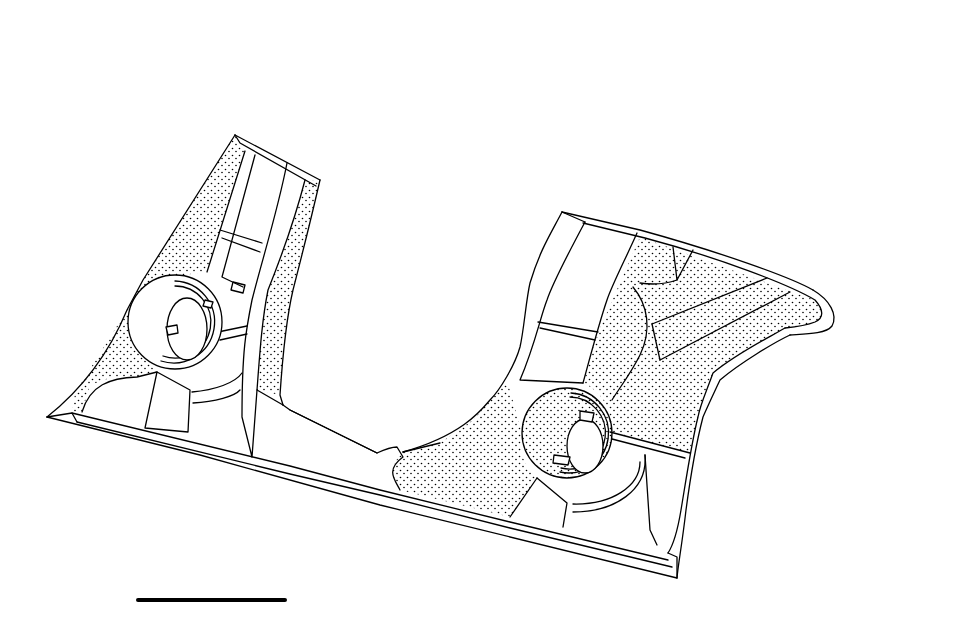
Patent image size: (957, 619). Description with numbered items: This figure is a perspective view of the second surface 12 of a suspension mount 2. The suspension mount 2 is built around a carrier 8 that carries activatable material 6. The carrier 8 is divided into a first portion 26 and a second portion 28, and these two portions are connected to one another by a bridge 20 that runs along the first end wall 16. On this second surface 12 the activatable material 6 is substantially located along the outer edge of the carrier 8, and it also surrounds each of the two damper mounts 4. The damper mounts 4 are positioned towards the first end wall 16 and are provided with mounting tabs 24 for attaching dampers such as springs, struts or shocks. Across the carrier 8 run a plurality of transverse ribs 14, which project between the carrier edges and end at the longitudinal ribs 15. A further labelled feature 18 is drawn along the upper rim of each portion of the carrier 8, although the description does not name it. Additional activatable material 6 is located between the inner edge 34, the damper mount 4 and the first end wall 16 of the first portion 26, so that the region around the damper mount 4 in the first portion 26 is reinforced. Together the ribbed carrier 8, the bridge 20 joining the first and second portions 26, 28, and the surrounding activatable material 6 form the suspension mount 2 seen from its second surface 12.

The suspension mount 2 is at (748, 82).
The damper mount 4 is at (168, 305).
The activatable material 6 is at (193, 198).
The carrier 8 is at (600, 195).
The second surface 12 is at (800, 477).
The transverse ribs 14 is at (247, 338).
The longitudinal rib 15 is at (235, 200).
The first end wall 16 is at (113, 432).
The top rim 18 is at (278, 160).
The bridge 20 is at (325, 447).
The mounting tabs 24 is at (167, 328).
The first portion 26 is at (787, 250).
The second portion 28 is at (187, 112).
The inner edge 34 is at (247, 340).